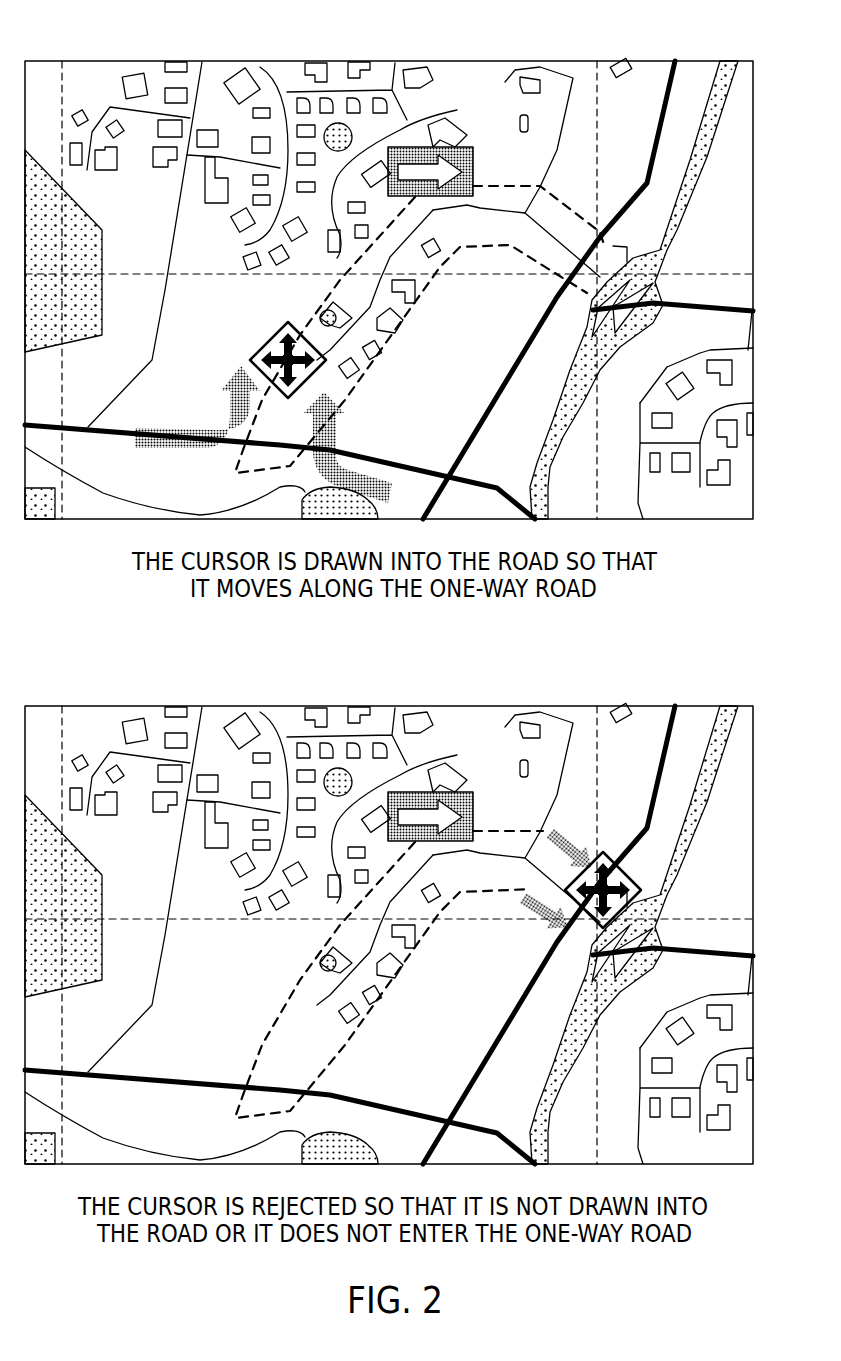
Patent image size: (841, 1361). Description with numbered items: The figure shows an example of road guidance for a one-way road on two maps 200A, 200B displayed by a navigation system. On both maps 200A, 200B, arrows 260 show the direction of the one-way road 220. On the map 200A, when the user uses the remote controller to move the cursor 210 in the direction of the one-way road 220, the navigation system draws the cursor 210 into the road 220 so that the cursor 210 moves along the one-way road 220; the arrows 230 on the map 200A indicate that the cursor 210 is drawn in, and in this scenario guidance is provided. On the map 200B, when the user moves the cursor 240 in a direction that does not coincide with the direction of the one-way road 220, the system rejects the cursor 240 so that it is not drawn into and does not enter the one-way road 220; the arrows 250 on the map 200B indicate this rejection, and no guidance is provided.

The map 200A is at (653, 61).
The map 200B is at (653, 706).
The cursor 210 is at (253, 365).
The one-way road 220 is at (480, 208).
The arrows 230 is at (228, 405).
The cursor 240 is at (635, 876).
The arrows 250 is at (560, 835).
The arrows 260 is at (473, 160).